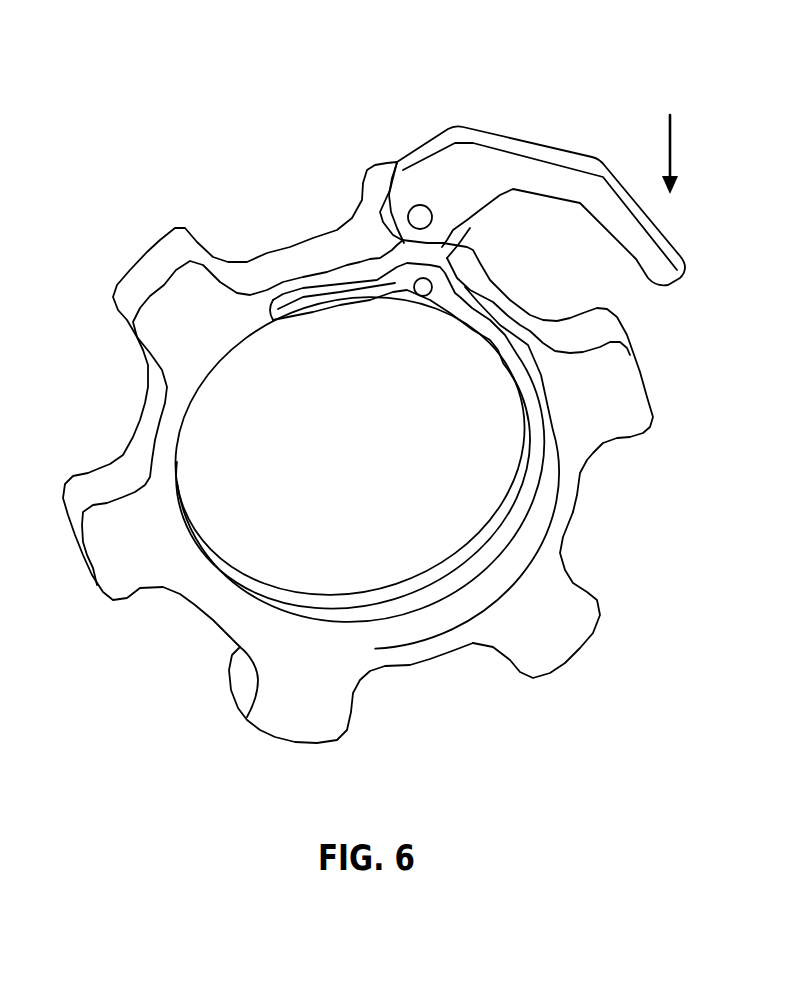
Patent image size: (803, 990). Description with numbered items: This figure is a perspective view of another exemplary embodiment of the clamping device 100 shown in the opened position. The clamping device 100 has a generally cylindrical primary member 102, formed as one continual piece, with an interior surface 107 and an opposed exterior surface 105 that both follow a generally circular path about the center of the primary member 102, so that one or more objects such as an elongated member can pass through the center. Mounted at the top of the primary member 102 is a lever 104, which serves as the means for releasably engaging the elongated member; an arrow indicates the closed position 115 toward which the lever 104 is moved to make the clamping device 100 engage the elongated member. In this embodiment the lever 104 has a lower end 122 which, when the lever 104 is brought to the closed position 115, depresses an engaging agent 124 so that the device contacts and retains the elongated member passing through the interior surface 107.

The clamping device 100 is at (394, 60).
The primary member 102 is at (288, 673).
The lever 104 is at (502, 168).
The exterior surface 105 is at (573, 512).
The interior surface 107 is at (190, 400).
The closed position 115 is at (667, 137).
The lower end 122 is at (470, 248).
The engaging agent 124 is at (403, 292).